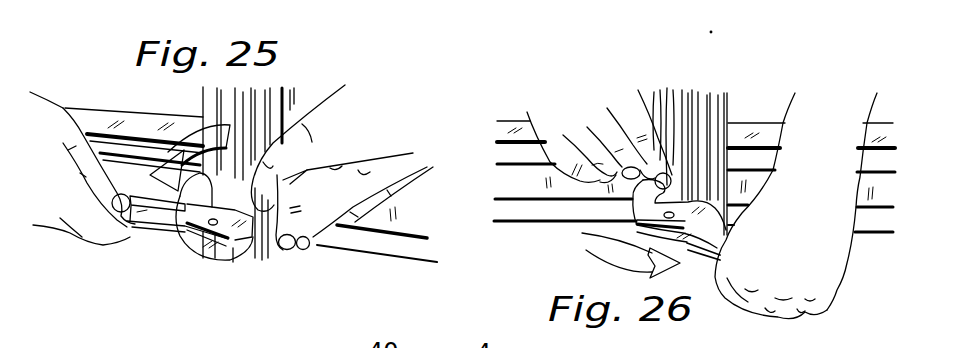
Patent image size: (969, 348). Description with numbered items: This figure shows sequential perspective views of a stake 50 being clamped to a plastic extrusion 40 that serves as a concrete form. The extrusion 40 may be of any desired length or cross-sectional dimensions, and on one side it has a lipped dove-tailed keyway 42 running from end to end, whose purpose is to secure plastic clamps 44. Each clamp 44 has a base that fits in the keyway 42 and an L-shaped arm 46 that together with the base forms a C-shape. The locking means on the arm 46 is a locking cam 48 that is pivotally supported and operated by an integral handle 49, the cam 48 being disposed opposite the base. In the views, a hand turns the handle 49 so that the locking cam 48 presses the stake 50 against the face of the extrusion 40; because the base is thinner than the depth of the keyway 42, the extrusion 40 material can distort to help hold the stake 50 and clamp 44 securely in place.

In FIG. 25, the plastic extrusion 40 is at (95, 112).
In FIG. 26, the plastic extrusion 40 is at (517, 134).
In FIG. 25, the lipped dove-tailed keyway 42 is at (123, 172).
In FIG. 26, the lipped dove-tailed keyway 42 is at (523, 178).
In FIG. 25, the plastic clamp 44 is at (167, 238).
In FIG. 26, the plastic clamp 44 is at (698, 258).
In FIG. 25, the L-shaped arm 46 is at (192, 217).
In FIG. 25, the locking cam 48 is at (220, 257).
In FIG. 26, the locking cam 48 is at (690, 187).
In FIG. 25, the integral handle 49 is at (138, 213).
In FIG. 26, the integral handle 49 is at (695, 247).
In FIG. 25, the stake 50 is at (263, 107).
In FIG. 26, the stake 50 is at (686, 115).